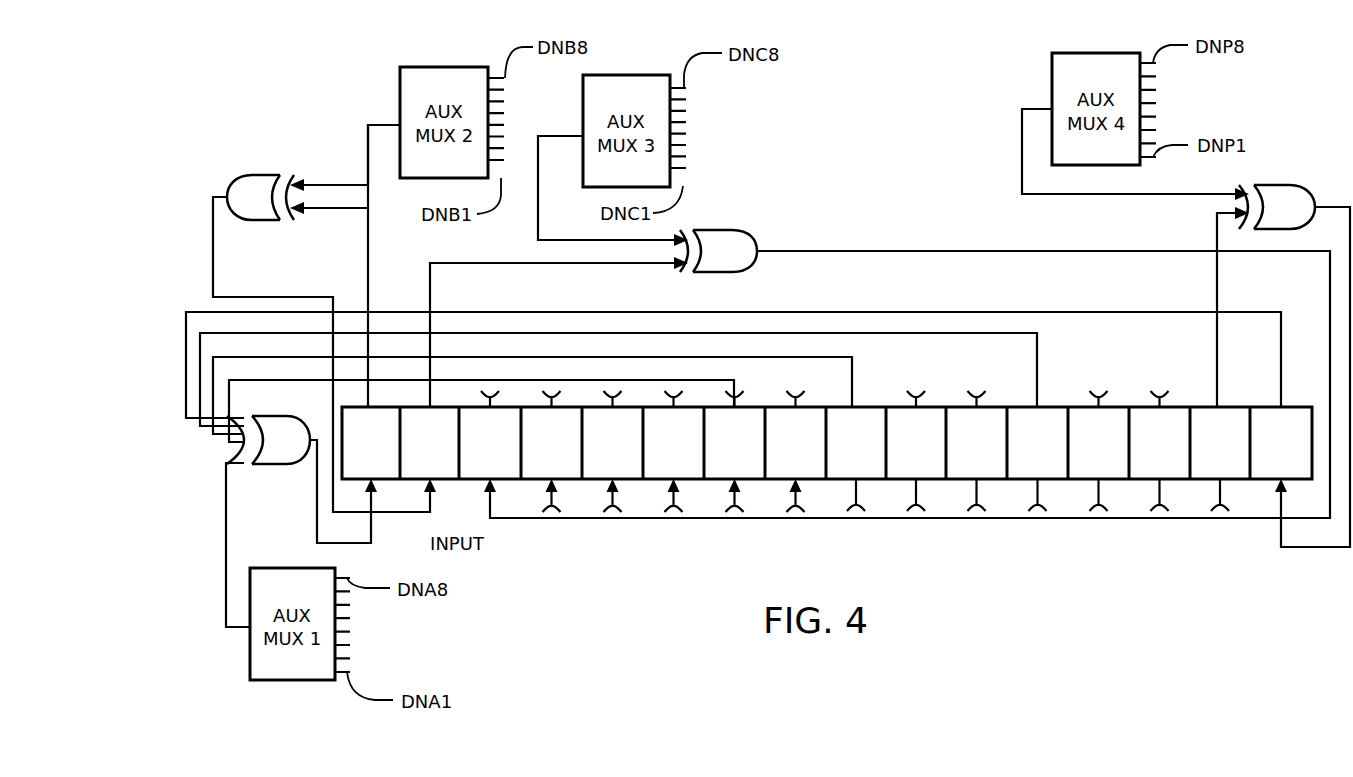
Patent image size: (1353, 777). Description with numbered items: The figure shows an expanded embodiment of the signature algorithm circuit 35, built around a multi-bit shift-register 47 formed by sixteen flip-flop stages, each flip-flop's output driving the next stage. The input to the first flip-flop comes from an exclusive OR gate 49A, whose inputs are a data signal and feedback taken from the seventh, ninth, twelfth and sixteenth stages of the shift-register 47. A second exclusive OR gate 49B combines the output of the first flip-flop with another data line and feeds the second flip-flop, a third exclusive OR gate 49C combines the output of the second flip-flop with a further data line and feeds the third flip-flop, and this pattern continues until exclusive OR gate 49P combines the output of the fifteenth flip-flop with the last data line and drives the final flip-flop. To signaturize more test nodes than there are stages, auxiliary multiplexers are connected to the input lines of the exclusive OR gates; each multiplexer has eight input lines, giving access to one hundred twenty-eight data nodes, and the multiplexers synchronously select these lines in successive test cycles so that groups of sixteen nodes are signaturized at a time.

The signature algorithm circuit 35 is at (1050, 534).
The multi-bit shift-register 47 is at (770, 501).
The exclusive OR gate 49A is at (293, 454).
The second exclusive OR gate 49B is at (261, 181).
The third exclusive OR gate 49C is at (729, 238).
The exclusive OR gate 49P is at (1282, 188).